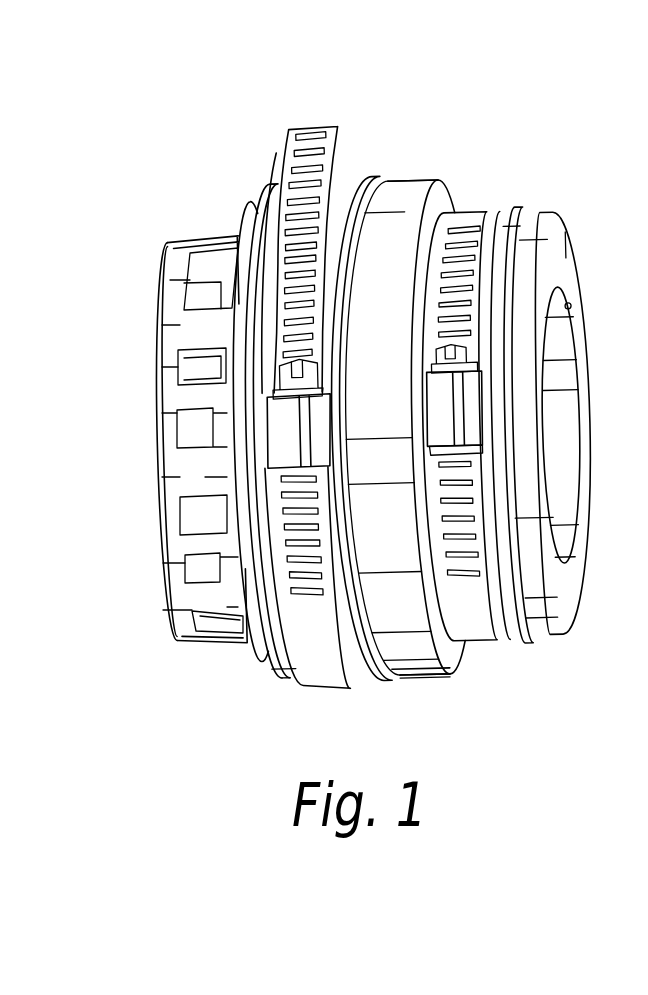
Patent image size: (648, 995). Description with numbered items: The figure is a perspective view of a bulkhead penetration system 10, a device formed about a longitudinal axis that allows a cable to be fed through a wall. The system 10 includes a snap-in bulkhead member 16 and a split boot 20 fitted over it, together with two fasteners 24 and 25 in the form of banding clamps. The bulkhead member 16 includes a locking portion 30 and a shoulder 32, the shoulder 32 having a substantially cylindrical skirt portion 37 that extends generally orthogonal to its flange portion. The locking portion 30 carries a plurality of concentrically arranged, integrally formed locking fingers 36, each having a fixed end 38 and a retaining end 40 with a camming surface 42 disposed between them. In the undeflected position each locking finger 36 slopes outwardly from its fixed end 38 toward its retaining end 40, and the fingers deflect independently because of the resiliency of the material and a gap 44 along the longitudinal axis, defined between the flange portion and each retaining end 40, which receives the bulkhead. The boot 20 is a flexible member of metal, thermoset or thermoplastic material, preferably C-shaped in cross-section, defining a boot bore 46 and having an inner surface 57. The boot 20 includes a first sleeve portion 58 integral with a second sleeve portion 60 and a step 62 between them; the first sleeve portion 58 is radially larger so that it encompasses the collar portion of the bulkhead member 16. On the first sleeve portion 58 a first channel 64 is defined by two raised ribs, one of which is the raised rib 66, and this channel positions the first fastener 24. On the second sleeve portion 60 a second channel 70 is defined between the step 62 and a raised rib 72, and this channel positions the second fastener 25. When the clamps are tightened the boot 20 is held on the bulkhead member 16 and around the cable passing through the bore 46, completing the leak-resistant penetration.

The bulkhead penetration system 10 is at (441, 148).
The snap-in bulkhead member 16 is at (183, 631).
The split boot 20 is at (448, 676).
The fastener 24 is at (334, 660).
The fastener 25 is at (492, 628).
The locking portion 30 is at (177, 592).
The shoulder 32 is at (270, 675).
The locking finger 36 is at (200, 262).
The skirt portion 37 is at (250, 199).
The fixed end 38 is at (178, 367).
The retaining end 40 is at (162, 318).
The camming surface 42 is at (197, 370).
The gap 44 is at (215, 440).
The boot bore 46 is at (571, 306).
The inner surface 57 is at (562, 350).
The first sleeve portion 58 is at (411, 675).
The second sleeve portion 60 is at (557, 639).
The step 62 is at (443, 645).
The first channel 64 is at (336, 162).
The raised rib 66 is at (275, 182).
The second channel 70 is at (496, 214).
The raised rib 72 is at (522, 210).